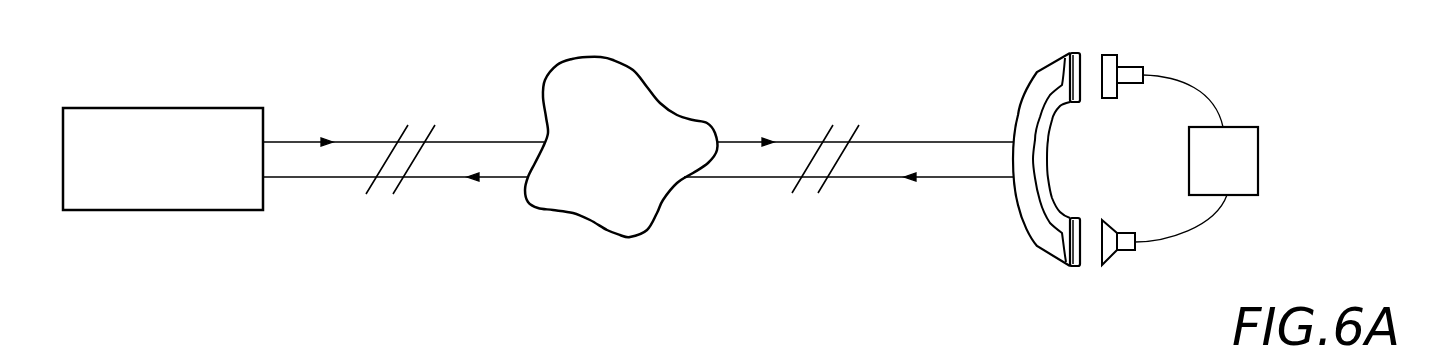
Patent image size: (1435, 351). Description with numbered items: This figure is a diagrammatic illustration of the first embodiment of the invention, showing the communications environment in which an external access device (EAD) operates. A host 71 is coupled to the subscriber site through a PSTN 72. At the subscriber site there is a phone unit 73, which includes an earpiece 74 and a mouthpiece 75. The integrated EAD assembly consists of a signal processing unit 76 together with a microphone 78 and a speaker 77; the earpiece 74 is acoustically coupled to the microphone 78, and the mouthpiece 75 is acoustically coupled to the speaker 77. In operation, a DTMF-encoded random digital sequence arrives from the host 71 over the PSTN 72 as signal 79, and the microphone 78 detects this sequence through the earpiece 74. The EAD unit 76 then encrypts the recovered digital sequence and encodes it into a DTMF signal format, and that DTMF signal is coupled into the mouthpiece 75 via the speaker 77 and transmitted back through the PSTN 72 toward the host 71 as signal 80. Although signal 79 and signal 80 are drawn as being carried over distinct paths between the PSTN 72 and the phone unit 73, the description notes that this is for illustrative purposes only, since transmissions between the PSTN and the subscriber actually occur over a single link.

The host 71 is at (112, 213).
The PSTN 72 is at (672, 198).
The phone unit 73 is at (1029, 166).
The earpiece 74 is at (1072, 50).
The mouthpiece 75 is at (1078, 268).
The signal processing unit 76 is at (1258, 157).
The speaker 77 is at (1106, 266).
The microphone 78 is at (1128, 66).
The arriving signal 79 is at (740, 142).
The transmitted signal 80 is at (994, 178).